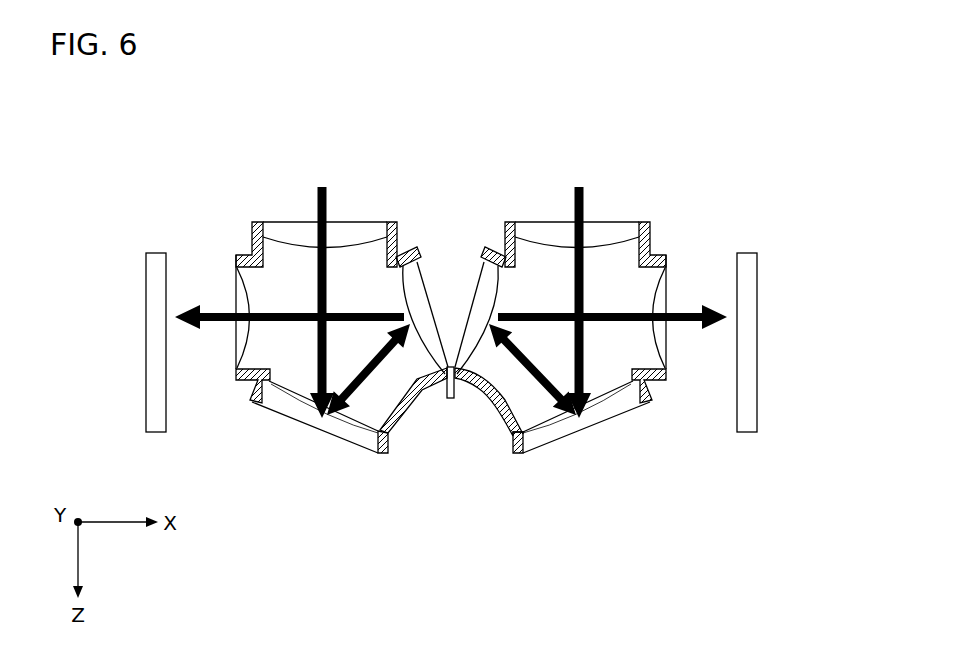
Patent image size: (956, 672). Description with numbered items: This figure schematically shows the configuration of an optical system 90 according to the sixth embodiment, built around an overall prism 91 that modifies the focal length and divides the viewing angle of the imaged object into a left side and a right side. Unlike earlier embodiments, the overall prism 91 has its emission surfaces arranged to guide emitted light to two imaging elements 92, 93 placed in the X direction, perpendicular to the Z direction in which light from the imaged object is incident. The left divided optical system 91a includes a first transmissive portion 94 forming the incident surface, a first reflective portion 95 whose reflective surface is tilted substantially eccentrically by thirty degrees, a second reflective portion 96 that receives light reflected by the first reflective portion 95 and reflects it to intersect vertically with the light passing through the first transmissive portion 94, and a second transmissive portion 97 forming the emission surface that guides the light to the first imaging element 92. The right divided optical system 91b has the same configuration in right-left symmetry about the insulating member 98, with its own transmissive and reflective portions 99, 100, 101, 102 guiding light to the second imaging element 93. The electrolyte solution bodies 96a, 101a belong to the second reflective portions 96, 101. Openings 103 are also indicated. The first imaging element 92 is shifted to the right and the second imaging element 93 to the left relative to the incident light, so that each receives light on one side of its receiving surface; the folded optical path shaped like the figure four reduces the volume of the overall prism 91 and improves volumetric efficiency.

The optical system 90 is at (664, 90).
The overall prism 91 is at (474, 288).
The left divided optical system 91a is at (323, 172).
The right divided optical system 91b is at (578, 172).
The first imaging element 92 is at (146, 392).
The second imaging element 93 is at (757, 389).
The first transmissive portion 94 is at (254, 220).
The first reflective portion 95 is at (376, 462).
The second reflective portion 96 is at (432, 248).
The electrolyte solution body 96a is at (418, 312).
The second transmissive portion 97 is at (232, 396).
The insulating member 98 is at (450, 399).
The first transmissive portion 99 is at (665, 221).
The first reflective portion 100 is at (523, 464).
The second reflective portion 101 is at (469, 266).
The electrolyte solution body 101a is at (480, 282).
The second transmissive portion 102 is at (668, 394).
The opening 103 is at (347, 273).